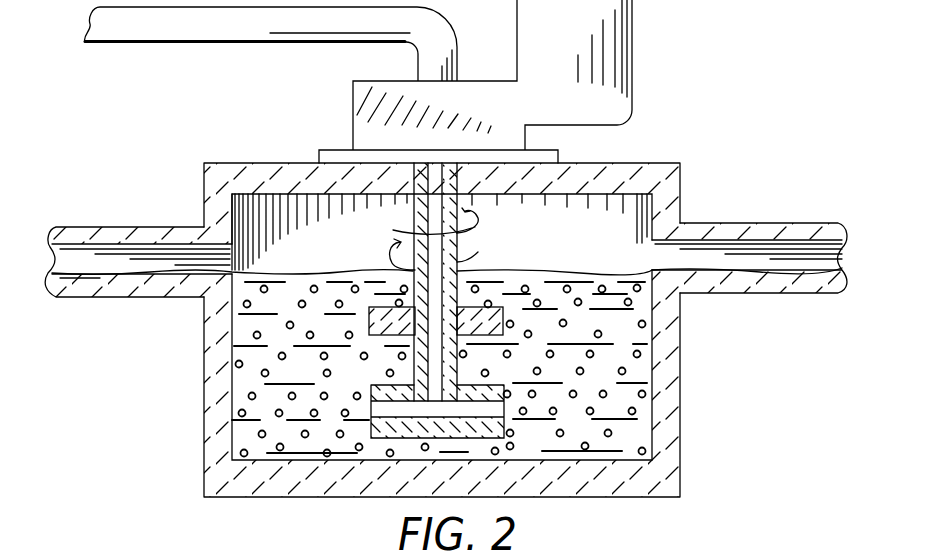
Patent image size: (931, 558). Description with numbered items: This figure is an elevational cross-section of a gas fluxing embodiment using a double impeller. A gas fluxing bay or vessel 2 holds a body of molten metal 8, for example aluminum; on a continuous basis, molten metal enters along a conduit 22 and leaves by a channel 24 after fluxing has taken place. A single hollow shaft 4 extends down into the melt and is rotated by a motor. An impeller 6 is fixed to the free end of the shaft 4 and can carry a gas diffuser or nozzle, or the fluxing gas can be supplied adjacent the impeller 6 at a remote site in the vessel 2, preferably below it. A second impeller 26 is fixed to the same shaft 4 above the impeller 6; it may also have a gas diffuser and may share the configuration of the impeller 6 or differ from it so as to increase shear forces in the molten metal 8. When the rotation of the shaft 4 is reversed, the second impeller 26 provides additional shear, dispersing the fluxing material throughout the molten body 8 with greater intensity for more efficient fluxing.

The gas fluxing bay 2 is at (716, 390).
The conduit 22 is at (78, 222).
The channel 24 is at (785, 222).
The hollow shaft 4 is at (457, 240).
The second impeller 26 is at (503, 320).
The molten metal 8 is at (237, 356).
The impeller 6 is at (485, 438).